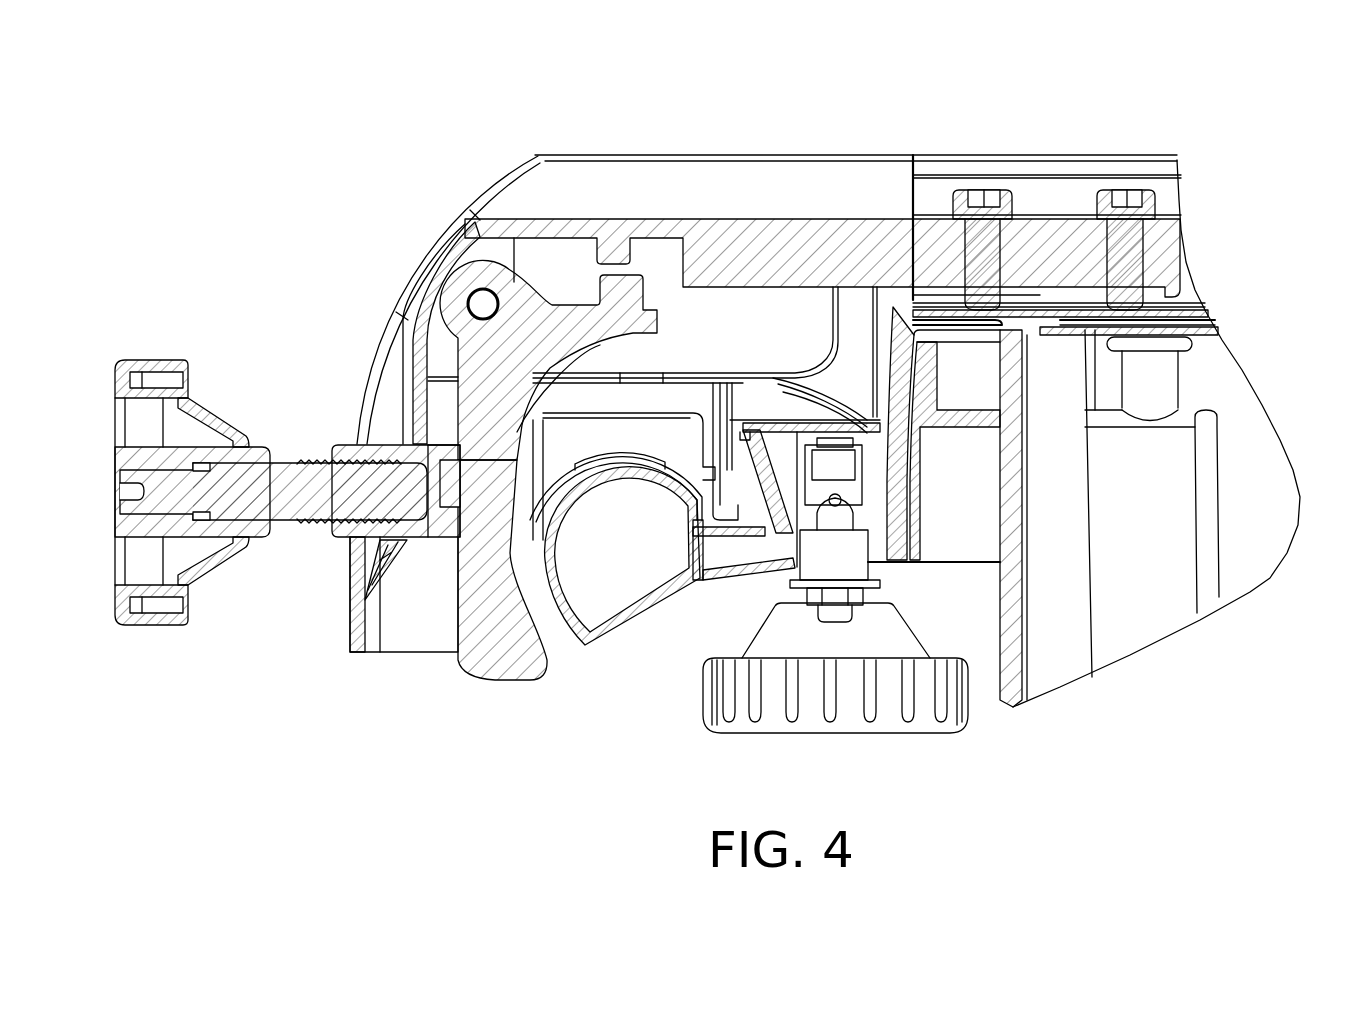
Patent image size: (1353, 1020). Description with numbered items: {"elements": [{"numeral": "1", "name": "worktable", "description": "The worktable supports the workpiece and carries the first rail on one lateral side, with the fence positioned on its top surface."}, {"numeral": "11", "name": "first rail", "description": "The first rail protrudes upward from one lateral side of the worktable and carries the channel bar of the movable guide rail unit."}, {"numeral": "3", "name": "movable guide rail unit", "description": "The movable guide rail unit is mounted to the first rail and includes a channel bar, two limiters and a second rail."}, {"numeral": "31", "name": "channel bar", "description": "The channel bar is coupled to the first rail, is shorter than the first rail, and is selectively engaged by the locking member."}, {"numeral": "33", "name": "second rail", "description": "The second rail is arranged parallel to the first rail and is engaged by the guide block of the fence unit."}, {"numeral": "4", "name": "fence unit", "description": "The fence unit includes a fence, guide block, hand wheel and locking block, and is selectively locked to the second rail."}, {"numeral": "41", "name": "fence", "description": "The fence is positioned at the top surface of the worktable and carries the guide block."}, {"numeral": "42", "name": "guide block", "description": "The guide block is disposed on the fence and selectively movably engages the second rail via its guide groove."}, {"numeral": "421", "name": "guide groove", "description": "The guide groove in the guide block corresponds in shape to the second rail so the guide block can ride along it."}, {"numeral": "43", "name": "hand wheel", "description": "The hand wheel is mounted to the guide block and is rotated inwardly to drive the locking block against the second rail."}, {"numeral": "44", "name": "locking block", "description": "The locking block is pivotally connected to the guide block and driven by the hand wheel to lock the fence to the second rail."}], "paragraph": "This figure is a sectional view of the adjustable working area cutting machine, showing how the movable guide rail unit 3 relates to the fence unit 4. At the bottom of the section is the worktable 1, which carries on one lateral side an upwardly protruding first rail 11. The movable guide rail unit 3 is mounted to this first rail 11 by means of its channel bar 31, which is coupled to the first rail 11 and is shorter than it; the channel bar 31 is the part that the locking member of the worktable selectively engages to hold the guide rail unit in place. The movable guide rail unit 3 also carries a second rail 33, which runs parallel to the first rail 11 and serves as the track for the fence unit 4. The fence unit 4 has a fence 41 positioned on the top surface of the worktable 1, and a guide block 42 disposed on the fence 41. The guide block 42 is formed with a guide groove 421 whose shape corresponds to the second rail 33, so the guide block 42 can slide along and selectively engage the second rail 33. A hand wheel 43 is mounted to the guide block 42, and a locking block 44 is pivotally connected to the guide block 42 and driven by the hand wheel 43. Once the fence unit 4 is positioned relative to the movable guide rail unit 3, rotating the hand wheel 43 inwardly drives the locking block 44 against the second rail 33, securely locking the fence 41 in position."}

The housing base 1 is at (987, 513).
The adjusting nut 11 is at (837, 497).
The lens 3 is at (642, 572).
The lens holder 31 is at (813, 500).
The sealing ring 33 is at (590, 487).
The adjusting mechanism 4 is at (333, 218).
The top cover rail 41 is at (1052, 195).
The nut seat 42 is at (420, 640).
The pivot arm 421 is at (562, 480).
The adjusting knob 43 is at (143, 360).
The lever body 44 is at (507, 647).